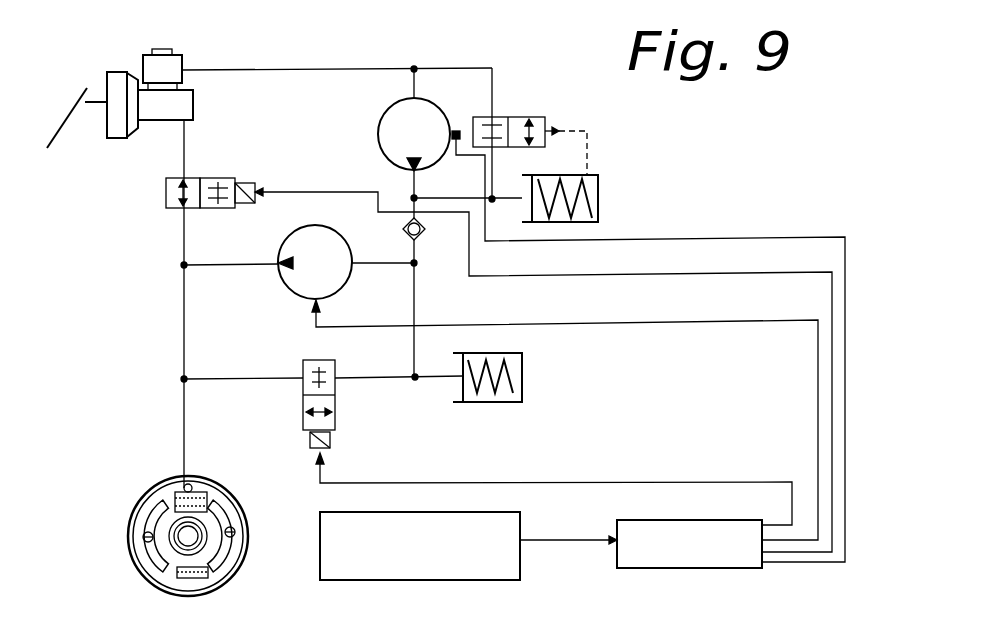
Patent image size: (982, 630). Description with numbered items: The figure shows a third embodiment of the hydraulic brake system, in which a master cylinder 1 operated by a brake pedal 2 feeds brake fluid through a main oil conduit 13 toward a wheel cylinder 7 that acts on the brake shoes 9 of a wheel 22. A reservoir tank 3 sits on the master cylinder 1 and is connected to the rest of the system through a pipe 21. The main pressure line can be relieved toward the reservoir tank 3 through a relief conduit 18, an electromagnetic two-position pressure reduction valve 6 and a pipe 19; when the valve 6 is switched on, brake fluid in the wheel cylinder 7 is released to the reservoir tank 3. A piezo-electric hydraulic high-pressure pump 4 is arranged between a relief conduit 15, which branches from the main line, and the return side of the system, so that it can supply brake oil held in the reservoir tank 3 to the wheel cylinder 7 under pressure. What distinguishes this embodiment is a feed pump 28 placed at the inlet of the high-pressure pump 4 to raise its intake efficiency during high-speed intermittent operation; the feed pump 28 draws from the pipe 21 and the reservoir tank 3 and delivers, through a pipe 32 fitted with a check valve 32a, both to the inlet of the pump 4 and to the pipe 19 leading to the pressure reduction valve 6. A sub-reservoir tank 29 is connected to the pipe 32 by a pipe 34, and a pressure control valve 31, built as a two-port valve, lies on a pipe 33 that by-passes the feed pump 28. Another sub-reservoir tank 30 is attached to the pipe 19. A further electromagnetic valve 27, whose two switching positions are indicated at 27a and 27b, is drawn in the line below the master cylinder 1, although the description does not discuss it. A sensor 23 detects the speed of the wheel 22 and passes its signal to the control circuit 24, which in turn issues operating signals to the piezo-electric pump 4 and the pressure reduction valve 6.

The master cylinder 1 is at (111, 72).
The brake pedal 2 is at (48, 146).
The reservoir tank 3 is at (183, 58).
The piezo-electric hydraulic pump 4 is at (280, 243).
The electromagnetic pressure reduction valve 6 is at (337, 427).
The wheel cylinder 7 is at (233, 488).
The brake shoes 9 is at (198, 534).
The main oil conduit 13 is at (181, 235).
The relief conduit 15 is at (223, 268).
The relief conduit 18 is at (235, 381).
The relief conduit 19 is at (417, 305).
The relief conduit 21 is at (360, 67).
The wheel 22 is at (223, 587).
The sensor 23 is at (522, 568).
The control circuit 24 is at (748, 568).
The solenoid valve 27 is at (195, 167).
The open position of valve 27a is at (166, 181).
The closed position of valve 27b is at (210, 177).
The feed pump 28 is at (380, 121).
The sub-reservoir tank 29 is at (598, 195).
The sub-reservoir tank 30 is at (527, 379).
The pressure control valve 31 is at (543, 115).
The pipe 32 is at (413, 184).
The check valve 32a is at (396, 230).
The pipe 33 is at (478, 67).
The pipe 34 is at (463, 197).